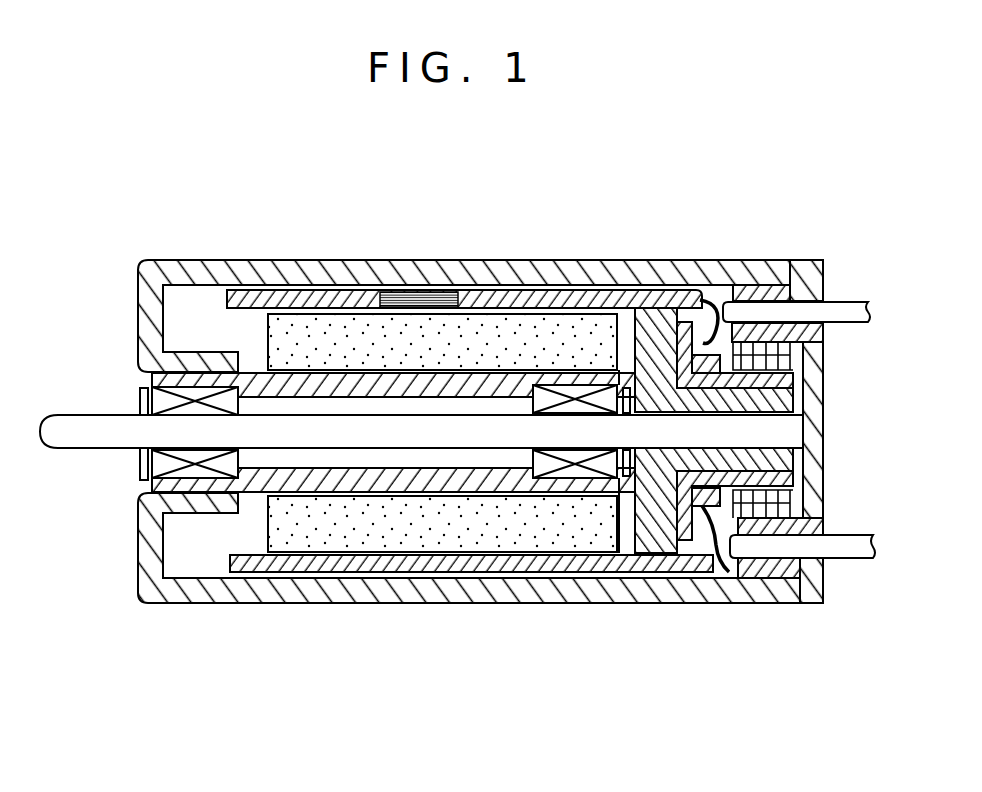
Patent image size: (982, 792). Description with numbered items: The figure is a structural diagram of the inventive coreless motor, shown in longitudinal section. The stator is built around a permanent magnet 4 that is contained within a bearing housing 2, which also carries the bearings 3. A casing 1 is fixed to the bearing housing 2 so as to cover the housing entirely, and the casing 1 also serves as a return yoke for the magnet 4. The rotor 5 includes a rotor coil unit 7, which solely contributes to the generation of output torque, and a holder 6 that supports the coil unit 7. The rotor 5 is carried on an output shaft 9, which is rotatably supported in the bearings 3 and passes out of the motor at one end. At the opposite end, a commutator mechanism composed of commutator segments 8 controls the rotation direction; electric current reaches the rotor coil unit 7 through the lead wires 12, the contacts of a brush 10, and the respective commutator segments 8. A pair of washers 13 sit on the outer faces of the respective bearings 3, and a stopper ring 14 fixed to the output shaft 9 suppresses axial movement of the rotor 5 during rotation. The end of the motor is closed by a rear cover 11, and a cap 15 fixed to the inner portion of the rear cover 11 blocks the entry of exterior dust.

The casing 1 is at (458, 268).
The bearing housing 2 is at (150, 378).
The bearings 3 is at (200, 472).
The magnet 4 is at (373, 520).
The rotor 5 is at (548, 290).
The holder 6 is at (657, 523).
The rotor coil unit 7 is at (349, 290).
The commutator segments 8 is at (687, 517).
The output shaft 9 is at (108, 440).
The brush 10 is at (778, 365).
The rear cover 11 is at (815, 268).
The lead wires 12 is at (757, 312).
The washers 13 is at (145, 492).
The stopper ring 14 is at (140, 400).
The cap 15 is at (823, 402).